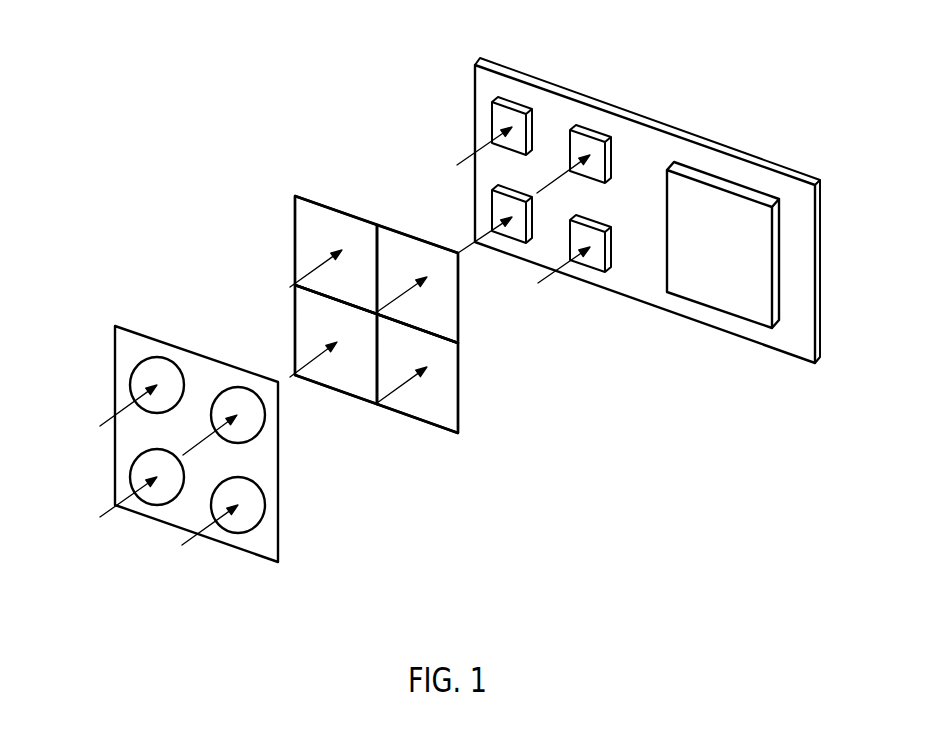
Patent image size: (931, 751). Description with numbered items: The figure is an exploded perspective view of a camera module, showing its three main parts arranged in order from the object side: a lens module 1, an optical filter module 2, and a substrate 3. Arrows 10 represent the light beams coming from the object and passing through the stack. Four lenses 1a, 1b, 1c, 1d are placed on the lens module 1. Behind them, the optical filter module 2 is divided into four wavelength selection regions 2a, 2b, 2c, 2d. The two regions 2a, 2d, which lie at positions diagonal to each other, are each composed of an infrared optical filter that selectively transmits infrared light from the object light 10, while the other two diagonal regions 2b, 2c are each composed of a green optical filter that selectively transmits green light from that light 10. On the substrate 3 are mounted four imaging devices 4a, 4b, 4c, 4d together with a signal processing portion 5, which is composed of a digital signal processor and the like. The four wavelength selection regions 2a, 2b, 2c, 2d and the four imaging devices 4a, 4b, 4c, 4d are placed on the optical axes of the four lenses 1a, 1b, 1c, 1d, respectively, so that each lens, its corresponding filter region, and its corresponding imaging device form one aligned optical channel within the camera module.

The arrows 10 is at (115, 507).
The lens module 1 is at (255, 558).
The lens 1a is at (140, 378).
The lens 1b is at (252, 427).
The lens 1c is at (140, 470).
The lens 1d is at (253, 518).
The optical filter module 2 is at (432, 428).
The wavelength selection region 2a is at (298, 225).
The wavelength selection region 2b is at (438, 300).
The wavelength selection region 2c is at (305, 328).
The wavelength selection region 2d is at (450, 392).
The substrate 3 is at (645, 170).
The imaging device 4a is at (508, 117).
The imaging device 4b is at (583, 143).
The imaging device 4c is at (503, 210).
The imaging device 4d is at (593, 257).
The signal processing portion 5 is at (710, 285).